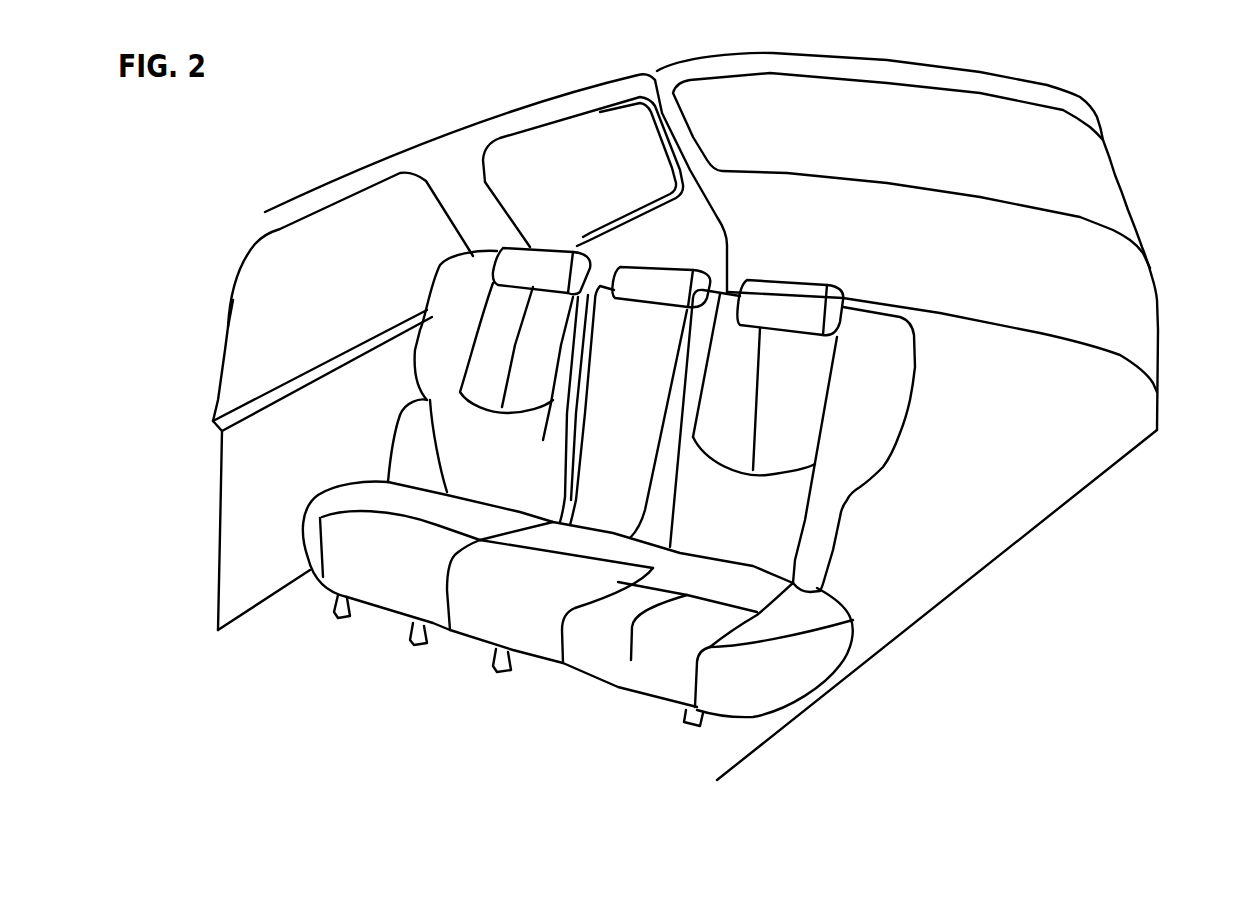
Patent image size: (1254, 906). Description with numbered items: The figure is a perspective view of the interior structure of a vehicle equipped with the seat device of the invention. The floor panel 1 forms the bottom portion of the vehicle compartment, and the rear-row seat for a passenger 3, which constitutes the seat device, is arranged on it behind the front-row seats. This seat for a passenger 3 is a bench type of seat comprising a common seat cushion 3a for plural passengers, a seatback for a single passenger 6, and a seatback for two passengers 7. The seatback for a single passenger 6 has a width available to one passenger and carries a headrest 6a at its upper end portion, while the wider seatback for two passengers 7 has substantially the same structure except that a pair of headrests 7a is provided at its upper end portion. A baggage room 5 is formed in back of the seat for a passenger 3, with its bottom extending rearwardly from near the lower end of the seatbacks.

The floor panel 1 is at (690, 750).
The seat for a passenger 3 is at (644, 457).
The seat cushion 3a is at (333, 482).
The baggage room 5 is at (1103, 401).
The seatback for a single passenger 6 is at (443, 312).
The headrest 6a is at (543, 255).
The seatback for two passengers 7 is at (905, 347).
The headrest 7a is at (658, 273).